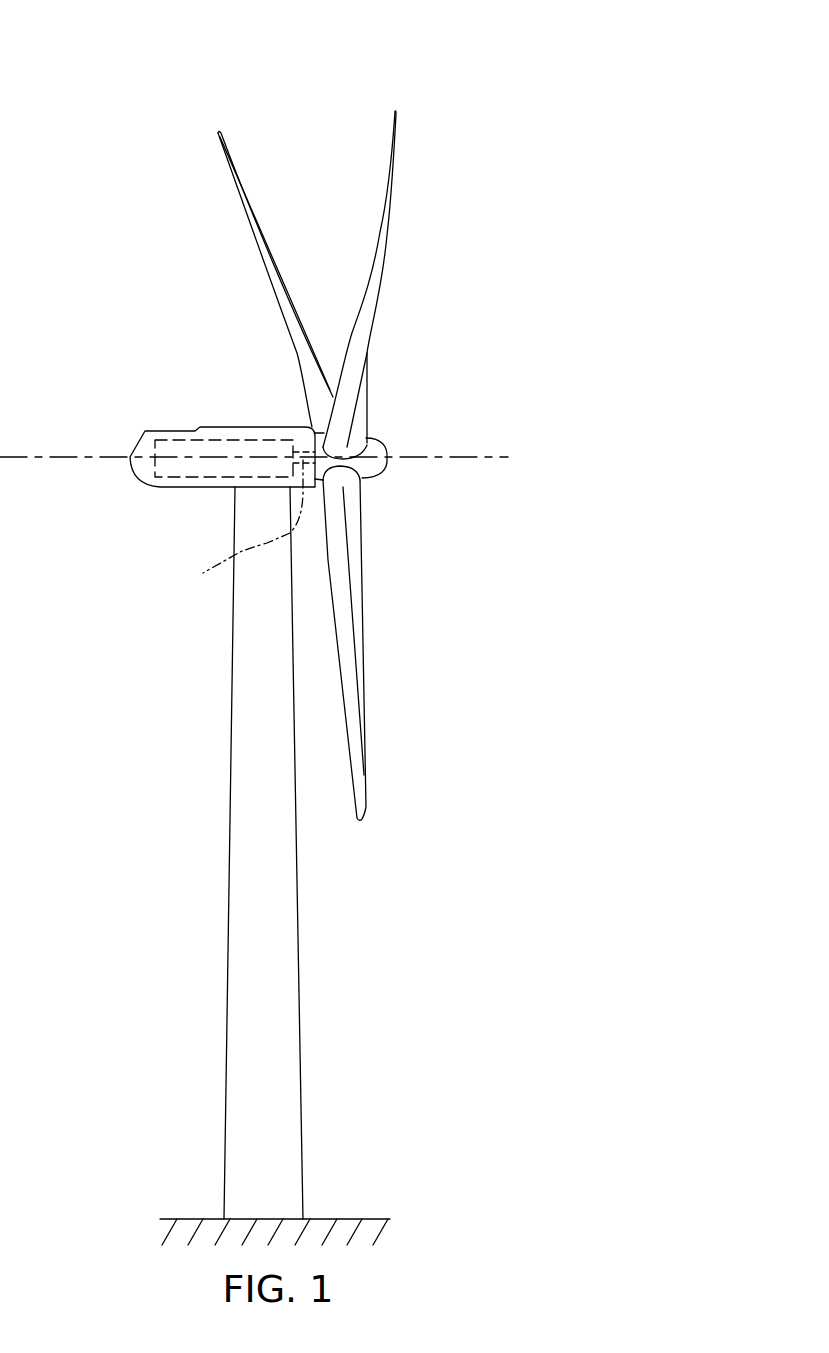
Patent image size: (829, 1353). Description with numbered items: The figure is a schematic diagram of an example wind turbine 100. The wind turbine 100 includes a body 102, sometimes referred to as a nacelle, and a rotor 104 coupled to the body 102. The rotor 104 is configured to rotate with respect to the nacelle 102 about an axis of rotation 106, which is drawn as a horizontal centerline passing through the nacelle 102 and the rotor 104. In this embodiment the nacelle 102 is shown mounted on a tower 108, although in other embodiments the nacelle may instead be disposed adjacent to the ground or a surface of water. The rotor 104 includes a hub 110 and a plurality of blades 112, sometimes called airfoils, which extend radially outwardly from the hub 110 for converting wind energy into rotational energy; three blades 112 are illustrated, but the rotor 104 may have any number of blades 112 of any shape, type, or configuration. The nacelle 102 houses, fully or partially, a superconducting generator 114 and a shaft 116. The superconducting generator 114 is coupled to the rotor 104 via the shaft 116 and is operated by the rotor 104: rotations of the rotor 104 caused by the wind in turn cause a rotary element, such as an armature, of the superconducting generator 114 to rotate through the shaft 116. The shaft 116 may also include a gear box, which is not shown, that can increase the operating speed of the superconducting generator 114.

The wind turbine 100 is at (362, 55).
The body (nacelle) 102 is at (217, 487).
The rotor 104 is at (372, 482).
The axis of rotation 106 is at (483, 461).
The tower 108 is at (228, 1003).
The hub 110 is at (378, 438).
The blades 112 is at (241, 210).
The superconducting generator 114 is at (202, 478).
The shaft 116 is at (230, 523).